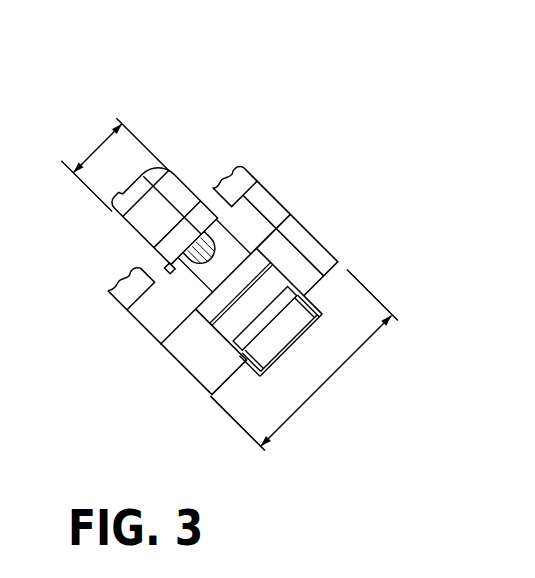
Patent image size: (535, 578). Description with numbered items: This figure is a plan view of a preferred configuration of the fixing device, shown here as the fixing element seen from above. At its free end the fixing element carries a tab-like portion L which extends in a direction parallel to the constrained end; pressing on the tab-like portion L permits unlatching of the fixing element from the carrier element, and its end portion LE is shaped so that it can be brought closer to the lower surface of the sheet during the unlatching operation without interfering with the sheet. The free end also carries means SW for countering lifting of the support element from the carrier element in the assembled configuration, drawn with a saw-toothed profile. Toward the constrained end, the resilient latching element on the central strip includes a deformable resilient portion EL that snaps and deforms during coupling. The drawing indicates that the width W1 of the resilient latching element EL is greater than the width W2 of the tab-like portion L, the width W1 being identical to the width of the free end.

The end portion LE is at (137, 187).
The tab-like portion L is at (202, 190).
The means for countering lifting SW is at (229, 180).
The resilient portion EL is at (338, 268).
The width of the resilient latching element W1 is at (326, 381).
The width of the tab-like portion W2 is at (113, 165).